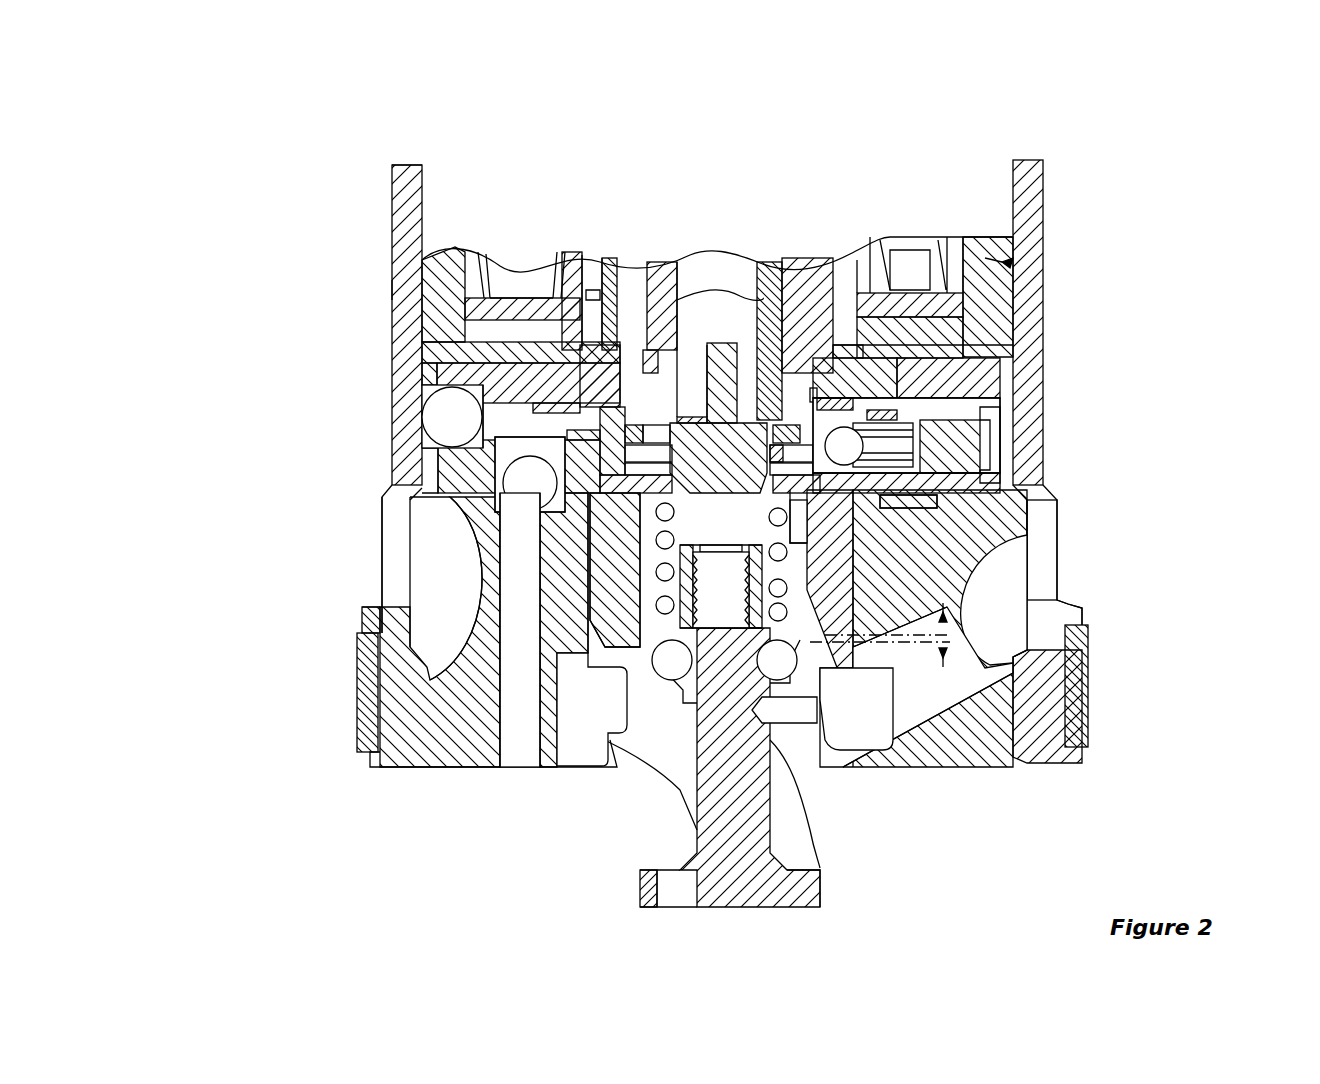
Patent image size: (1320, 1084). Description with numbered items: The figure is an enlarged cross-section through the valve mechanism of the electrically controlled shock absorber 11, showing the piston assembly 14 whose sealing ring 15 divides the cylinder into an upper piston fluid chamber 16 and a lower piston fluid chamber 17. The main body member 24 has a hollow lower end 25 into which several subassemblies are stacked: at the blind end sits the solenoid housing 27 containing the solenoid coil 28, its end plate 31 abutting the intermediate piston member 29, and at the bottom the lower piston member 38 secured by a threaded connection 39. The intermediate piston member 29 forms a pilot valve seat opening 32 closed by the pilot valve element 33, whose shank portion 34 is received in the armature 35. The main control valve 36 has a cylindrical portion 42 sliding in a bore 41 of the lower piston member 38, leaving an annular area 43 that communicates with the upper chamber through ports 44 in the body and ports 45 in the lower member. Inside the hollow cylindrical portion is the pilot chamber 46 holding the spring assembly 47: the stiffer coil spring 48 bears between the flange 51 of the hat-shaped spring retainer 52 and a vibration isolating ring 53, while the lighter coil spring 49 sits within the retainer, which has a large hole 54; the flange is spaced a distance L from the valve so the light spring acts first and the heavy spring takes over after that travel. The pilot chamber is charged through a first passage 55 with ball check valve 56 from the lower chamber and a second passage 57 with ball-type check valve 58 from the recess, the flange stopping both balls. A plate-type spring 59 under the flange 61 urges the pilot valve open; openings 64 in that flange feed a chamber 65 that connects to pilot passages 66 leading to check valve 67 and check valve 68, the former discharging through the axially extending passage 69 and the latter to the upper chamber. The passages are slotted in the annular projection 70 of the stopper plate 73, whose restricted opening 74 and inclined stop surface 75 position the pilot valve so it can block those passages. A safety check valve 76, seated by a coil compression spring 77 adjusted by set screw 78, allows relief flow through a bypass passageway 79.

The shock absorber 11 is at (240, 778).
The piston assembly 14 is at (384, 280).
The sealing ring 15 is at (1090, 684).
The upper piston fluid chamber 16 is at (856, 149).
The lower piston fluid chamber 17 is at (1010, 877).
The main body member 24 is at (1033, 186).
The hollow lower end 25 is at (428, 167).
The solenoid housing 27 is at (1040, 252).
The solenoid coil 28 is at (912, 256).
The intermediate piston member 29 is at (1013, 380).
The end plate 31 is at (1013, 347).
The pilot valve seat opening 32 is at (1013, 481).
The pilot valve element 33 is at (620, 560).
The shank portion 34 is at (690, 518).
The armature 35 is at (730, 268).
The main control valve 36 is at (820, 907).
The lower piston member 38 is at (1030, 516).
The threaded connection 39 is at (1007, 722).
The bore 41 is at (1020, 588).
The cylindrical portion 42 is at (590, 725).
The annular area 43 is at (905, 736).
The ports 44 is at (382, 551).
The ports 45 is at (1060, 622).
The pilot chamber 46 is at (758, 503).
The spring assembly 47 is at (258, 617).
The coil spring 48 is at (375, 613).
The coil spring 49 is at (360, 649).
The flange 51 is at (588, 650).
The hat-shaped spring retainer 52 is at (470, 592).
The vibration isolating ring 53 is at (600, 521).
The hole 54 is at (790, 543).
The first passage 55 is at (680, 772).
The ball check valve 56 is at (672, 682).
The second passage 57 is at (793, 717).
The ball-type check valve 58 is at (848, 740).
The plate-type spring 59 is at (1013, 455).
The flange 61 is at (822, 342).
The openings 64 is at (797, 300).
The chamber 65 is at (783, 292).
The pilot passages 66 is at (500, 392).
The check valve 67 is at (528, 483).
The check valve 68 is at (445, 417).
The axially extending passage 69 is at (503, 690).
The annular projection 70 is at (547, 300).
The stopper plate 73 is at (592, 296).
The restricted opening 74 is at (622, 395).
The stop surface 75 is at (665, 300).
The safety check valve 76 is at (1013, 438).
The coil compression spring 77 is at (1013, 420).
The set screw 78 is at (1013, 410).
The bypass passageway 79 is at (1013, 386).